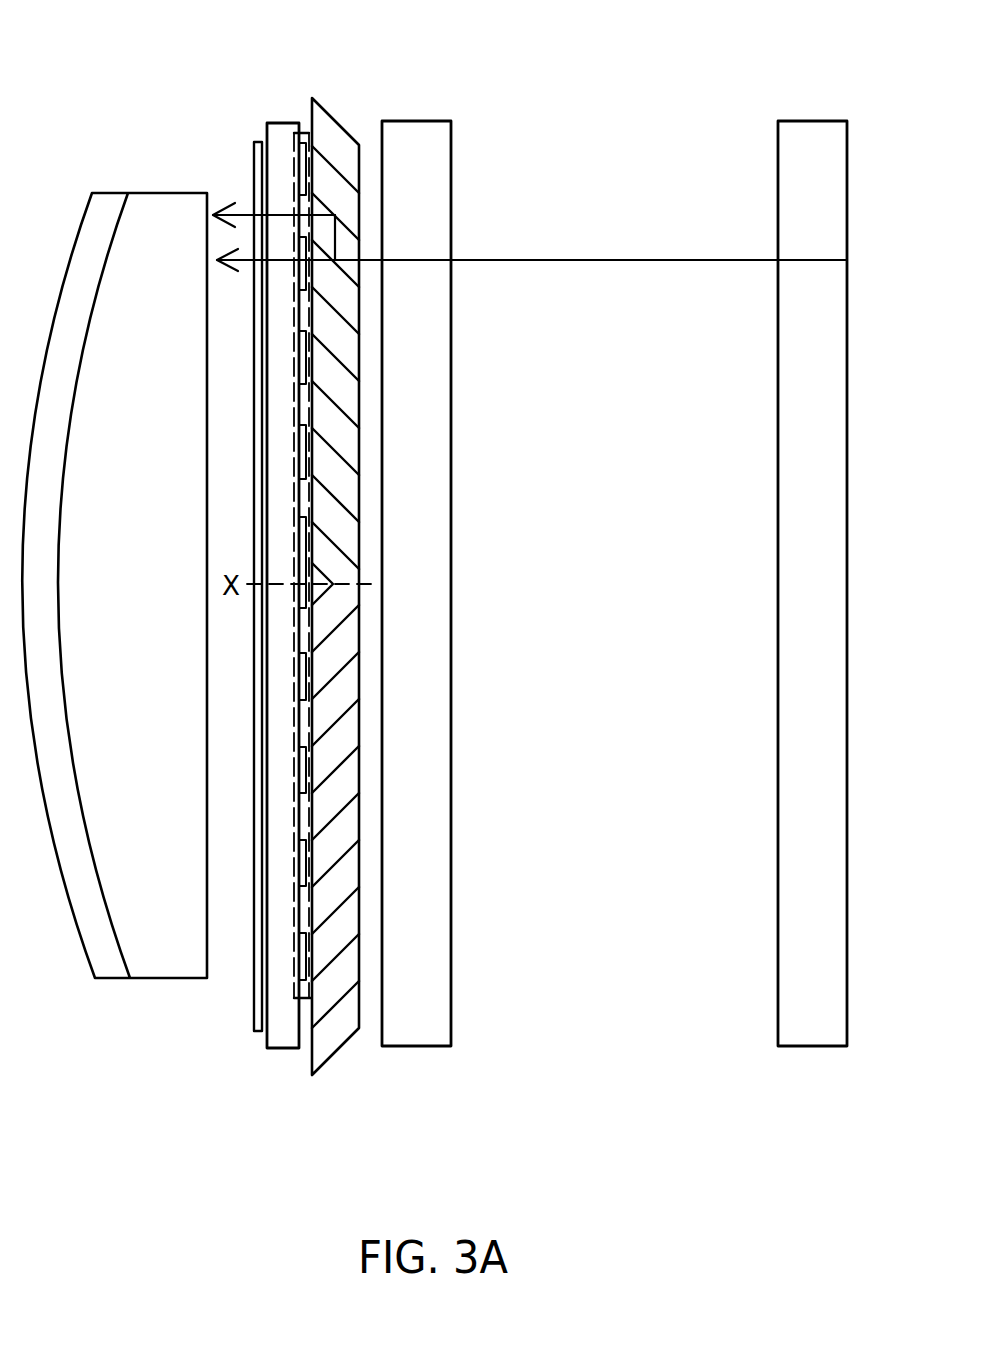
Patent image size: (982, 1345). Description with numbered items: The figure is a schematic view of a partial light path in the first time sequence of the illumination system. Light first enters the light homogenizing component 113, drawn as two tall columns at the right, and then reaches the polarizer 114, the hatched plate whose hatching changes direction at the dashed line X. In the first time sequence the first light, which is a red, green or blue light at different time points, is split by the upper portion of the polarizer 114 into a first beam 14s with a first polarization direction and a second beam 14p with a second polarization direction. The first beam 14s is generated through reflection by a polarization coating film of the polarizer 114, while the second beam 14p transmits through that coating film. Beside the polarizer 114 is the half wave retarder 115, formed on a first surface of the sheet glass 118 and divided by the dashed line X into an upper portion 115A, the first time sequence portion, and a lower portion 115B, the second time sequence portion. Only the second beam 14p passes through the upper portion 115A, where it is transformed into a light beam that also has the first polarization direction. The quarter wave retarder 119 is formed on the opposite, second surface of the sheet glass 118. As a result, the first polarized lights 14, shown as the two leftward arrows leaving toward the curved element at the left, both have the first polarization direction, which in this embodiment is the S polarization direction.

The first polarized light 14 is at (243, 197).
The first beam 14s is at (337, 230).
The second beam 14p is at (323, 262).
The light homogenizing component 113 is at (845, 113).
The polarizer 114 is at (342, 138).
The half wave retarder 115 is at (553, 466).
The upper portion 115A is at (310, 500).
The lower portion 115B is at (312, 833).
The sheet glass 118 is at (279, 125).
The quarter wave retarder 119 is at (258, 142).